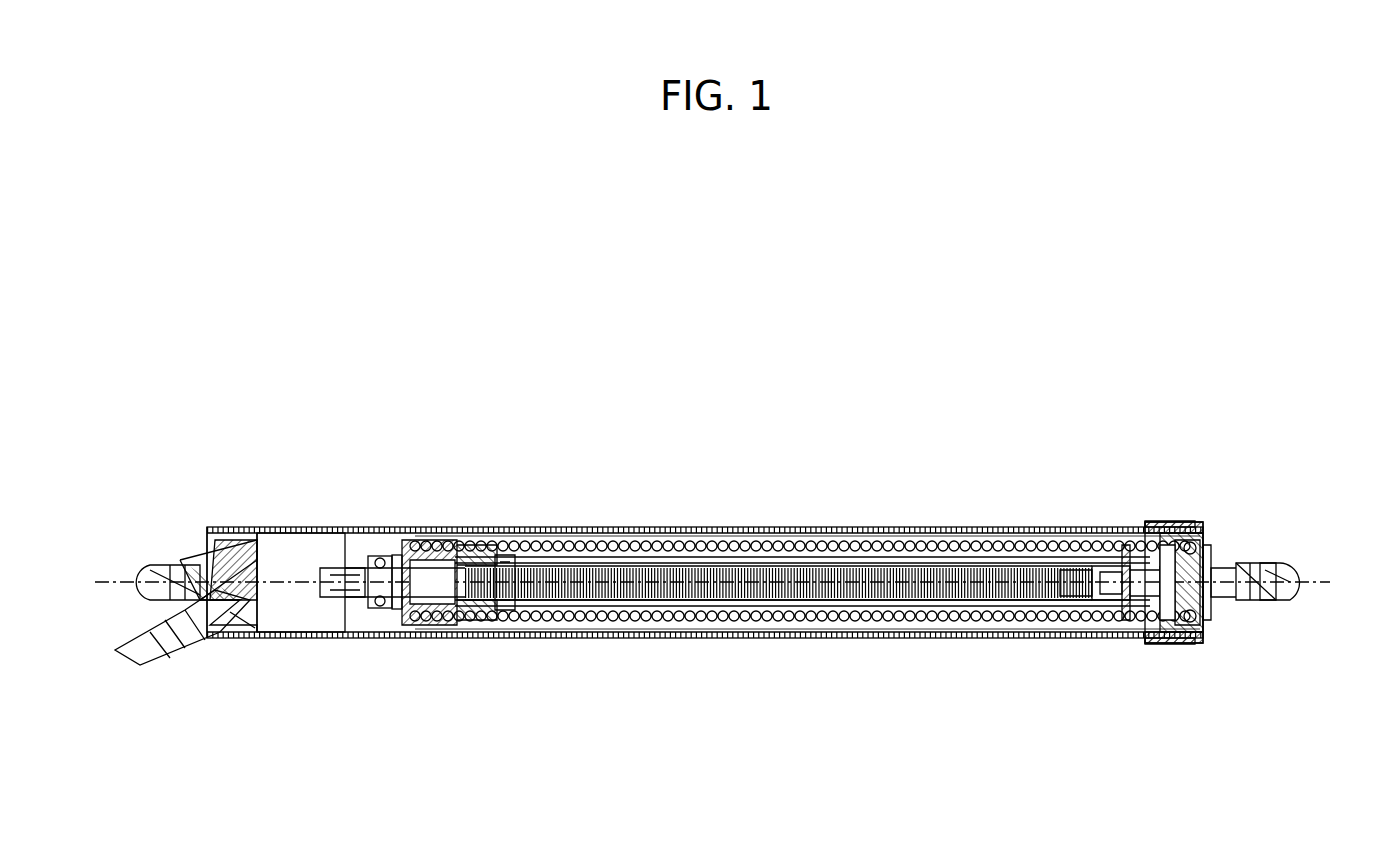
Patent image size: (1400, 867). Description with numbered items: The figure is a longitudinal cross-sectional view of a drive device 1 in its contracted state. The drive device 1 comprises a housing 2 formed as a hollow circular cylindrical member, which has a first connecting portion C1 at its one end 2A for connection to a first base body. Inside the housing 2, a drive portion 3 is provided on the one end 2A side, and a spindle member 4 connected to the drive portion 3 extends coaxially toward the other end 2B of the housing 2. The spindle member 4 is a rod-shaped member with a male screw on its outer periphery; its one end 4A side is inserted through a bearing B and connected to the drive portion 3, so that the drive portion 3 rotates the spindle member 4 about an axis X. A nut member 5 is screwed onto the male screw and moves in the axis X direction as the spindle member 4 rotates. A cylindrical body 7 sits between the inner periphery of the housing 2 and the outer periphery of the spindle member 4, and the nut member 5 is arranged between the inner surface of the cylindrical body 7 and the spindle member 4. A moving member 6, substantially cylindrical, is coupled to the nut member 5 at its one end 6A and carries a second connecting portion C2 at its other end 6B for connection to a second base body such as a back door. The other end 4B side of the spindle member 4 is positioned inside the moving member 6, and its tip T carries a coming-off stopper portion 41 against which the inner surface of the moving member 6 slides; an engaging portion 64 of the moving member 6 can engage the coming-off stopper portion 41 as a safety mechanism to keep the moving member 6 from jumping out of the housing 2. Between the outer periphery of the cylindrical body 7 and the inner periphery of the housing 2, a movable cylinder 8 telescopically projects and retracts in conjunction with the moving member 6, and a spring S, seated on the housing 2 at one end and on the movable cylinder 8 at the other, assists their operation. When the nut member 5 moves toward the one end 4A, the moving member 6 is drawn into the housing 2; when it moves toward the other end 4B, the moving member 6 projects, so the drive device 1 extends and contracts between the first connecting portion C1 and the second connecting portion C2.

The drive device 1 is at (1185, 338).
The housing 2 is at (432, 528).
The one end of housing 2A is at (230, 522).
The other end of housing 2B is at (1140, 524).
The drive portion 3 is at (290, 622).
The spindle member 4 is at (620, 592).
The one end of spindle member 4A is at (355, 540).
The other end of spindle member 4B is at (1090, 568).
The coming-off stopper portion 41 is at (1085, 626).
The nut member 5 is at (500, 560).
The moving member 6 is at (620, 547).
The one end of moving member 6A is at (468, 555).
The other end of moving member 6B is at (1180, 527).
The engaging portion 64 is at (515, 632).
The cylindrical body 7 is at (565, 556).
The movable cylinder 8 is at (1182, 644).
The bearing B is at (372, 624).
The spring S is at (700, 631).
The tip of spindle member T is at (1118, 629).
The axis X is at (112, 580).
The first connecting portion C1 is at (133, 598).
The second connecting portion C2 is at (1285, 565).